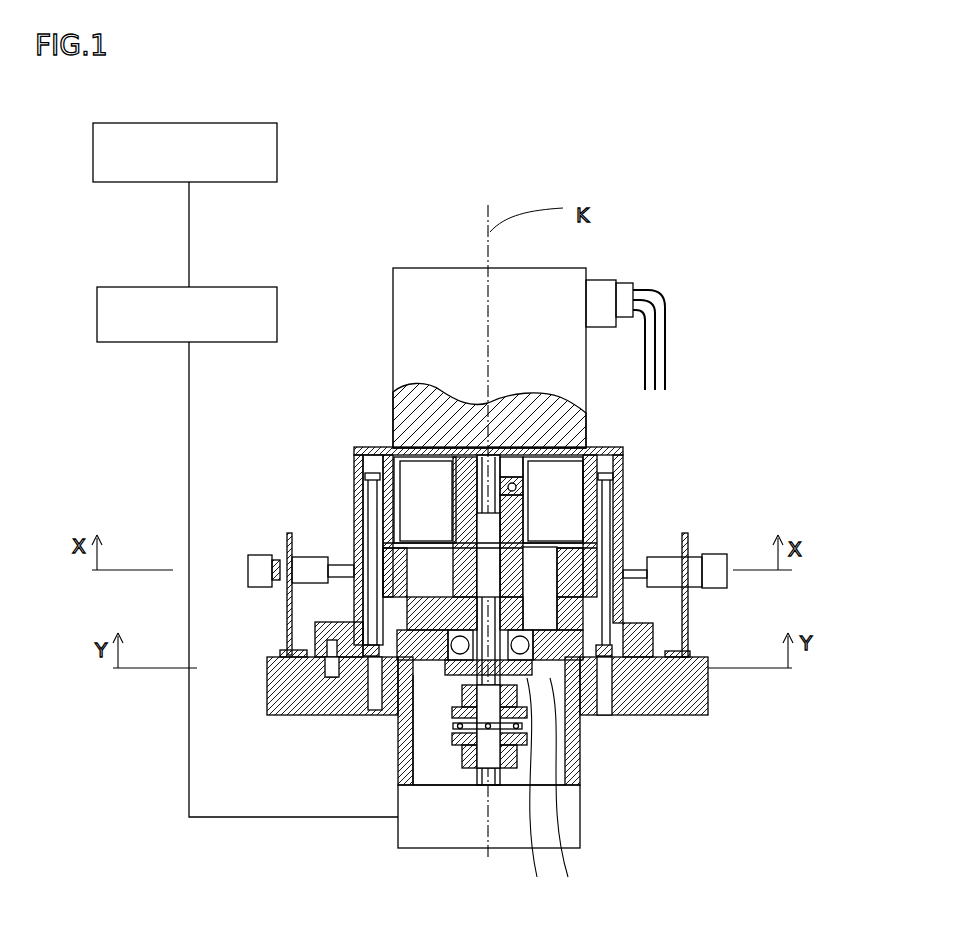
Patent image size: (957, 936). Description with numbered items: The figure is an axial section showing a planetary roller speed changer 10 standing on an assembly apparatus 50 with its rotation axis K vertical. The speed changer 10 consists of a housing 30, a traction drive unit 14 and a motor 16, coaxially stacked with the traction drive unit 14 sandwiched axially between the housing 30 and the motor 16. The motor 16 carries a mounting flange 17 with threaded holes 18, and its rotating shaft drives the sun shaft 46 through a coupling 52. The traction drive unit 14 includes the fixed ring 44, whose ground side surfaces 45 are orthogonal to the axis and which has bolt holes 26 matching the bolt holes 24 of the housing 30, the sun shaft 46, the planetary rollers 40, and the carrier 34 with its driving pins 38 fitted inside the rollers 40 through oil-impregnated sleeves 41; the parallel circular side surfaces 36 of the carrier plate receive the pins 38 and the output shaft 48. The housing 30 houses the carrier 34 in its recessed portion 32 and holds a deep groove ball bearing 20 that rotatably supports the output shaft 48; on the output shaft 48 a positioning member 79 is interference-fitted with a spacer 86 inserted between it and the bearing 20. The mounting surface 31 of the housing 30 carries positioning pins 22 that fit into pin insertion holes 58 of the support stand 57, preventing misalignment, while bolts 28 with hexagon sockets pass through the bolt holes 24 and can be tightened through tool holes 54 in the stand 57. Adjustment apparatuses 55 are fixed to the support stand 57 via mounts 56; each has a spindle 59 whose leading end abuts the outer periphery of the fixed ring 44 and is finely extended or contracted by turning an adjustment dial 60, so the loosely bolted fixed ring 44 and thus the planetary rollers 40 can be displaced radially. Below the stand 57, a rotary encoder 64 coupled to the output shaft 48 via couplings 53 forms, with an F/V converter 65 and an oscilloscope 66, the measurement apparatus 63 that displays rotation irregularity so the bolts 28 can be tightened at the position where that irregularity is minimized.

The planetary roller speed changer 10 is at (694, 266).
The traction drive unit 14 is at (689, 530).
The motor 16 is at (396, 284).
The mounting flange 17 is at (356, 446).
The threaded holes 18 is at (356, 520).
The deep groove ball bearing 20 is at (402, 720).
The positioning pins 22 is at (290, 680).
The bolt holes 24 is at (350, 617).
The bolt holes 26 is at (348, 563).
The bolts with hexagon sockets 28 is at (300, 650).
The housing 30 is at (690, 688).
The mounting surface 31 is at (665, 714).
The recessed portion 32 is at (330, 700).
The carrier 34 is at (355, 497).
The circular side surfaces 36 is at (440, 612).
The driving pins 38 is at (620, 478).
The planetary rollers 40 is at (628, 522).
The sleeves 41 is at (622, 492).
The fixed ring 44 is at (688, 569).
The side surfaces 45 is at (440, 600).
The sun shaft 46 is at (512, 484).
The output shaft 48 is at (437, 772).
The assembly apparatus 50 is at (632, 771).
The coupling 52 is at (440, 455).
The couplings 53 is at (418, 775).
The tool holes 54 is at (440, 665).
The adjustment apparatus 55 is at (236, 585).
The mount 56 is at (282, 618).
The support stand 57 is at (693, 717).
The pin insertion holes 58 is at (332, 713).
The spindle 59 is at (290, 548).
The adjustment dial 60 is at (258, 562).
The measurement apparatus 63 is at (293, 499).
The rotary encoder 64 is at (578, 823).
The F/V converter 65 is at (140, 345).
The oscilloscope 66 is at (140, 183).
The positioning member 79 is at (523, 793).
The spacer 86 is at (543, 793).